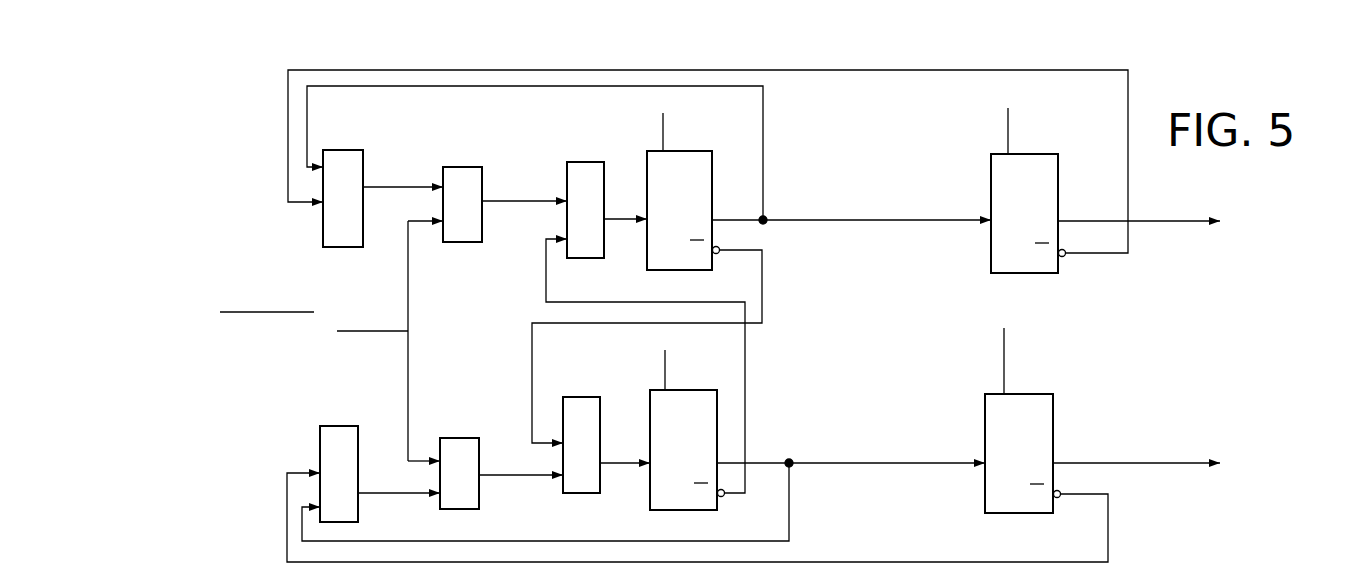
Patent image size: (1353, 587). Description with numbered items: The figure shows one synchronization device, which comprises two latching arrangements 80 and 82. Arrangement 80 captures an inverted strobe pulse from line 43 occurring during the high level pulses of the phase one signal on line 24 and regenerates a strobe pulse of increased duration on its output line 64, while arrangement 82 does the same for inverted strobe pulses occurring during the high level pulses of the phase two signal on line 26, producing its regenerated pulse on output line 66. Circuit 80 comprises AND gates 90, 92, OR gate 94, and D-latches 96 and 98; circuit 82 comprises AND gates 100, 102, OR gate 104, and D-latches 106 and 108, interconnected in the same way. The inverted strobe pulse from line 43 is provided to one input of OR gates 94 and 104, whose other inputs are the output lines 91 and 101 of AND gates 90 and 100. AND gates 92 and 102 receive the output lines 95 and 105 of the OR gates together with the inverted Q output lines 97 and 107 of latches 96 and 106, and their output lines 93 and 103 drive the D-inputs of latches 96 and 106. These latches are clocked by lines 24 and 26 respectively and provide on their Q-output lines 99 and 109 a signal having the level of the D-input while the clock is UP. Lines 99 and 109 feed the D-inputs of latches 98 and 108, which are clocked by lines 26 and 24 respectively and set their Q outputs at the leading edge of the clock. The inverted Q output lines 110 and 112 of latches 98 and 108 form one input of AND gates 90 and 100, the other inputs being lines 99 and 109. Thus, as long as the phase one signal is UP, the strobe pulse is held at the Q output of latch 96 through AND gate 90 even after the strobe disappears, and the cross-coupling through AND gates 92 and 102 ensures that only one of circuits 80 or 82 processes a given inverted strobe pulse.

The line 24 is at (660, 128).
The line 26 is at (1007, 125).
The line 43 is at (377, 330).
The output line 64 is at (1157, 225).
The output line 66 is at (1153, 468).
The latching arrangement 80 is at (832, 128).
The latching arrangement 82 is at (882, 423).
The AND gate 90 is at (358, 150).
The output line 91 is at (381, 180).
The AND gate 92 is at (590, 160).
The output line 93 is at (618, 213).
The OR gate 94 is at (473, 167).
The output line 95 is at (498, 199).
The D-latch 96 is at (703, 150).
The inverted Q output line 97 is at (765, 280).
The D-latch 98 is at (1045, 153).
The Q-output line 99 is at (810, 217).
The AND gate 100 is at (347, 426).
The output line 101 is at (387, 493).
The AND gate 102 is at (575, 397).
The output line 103 is at (627, 449).
The OR gate 104 is at (447, 437).
The output line 105 is at (493, 477).
The D-latch 106 is at (692, 390).
The inverted Q output line 107 is at (728, 495).
The D-latch 108 is at (1053, 410).
The Q-output line 109 is at (818, 447).
The inverted Q output line 110 is at (1090, 255).
The inverted Q output line 112 is at (1085, 498).